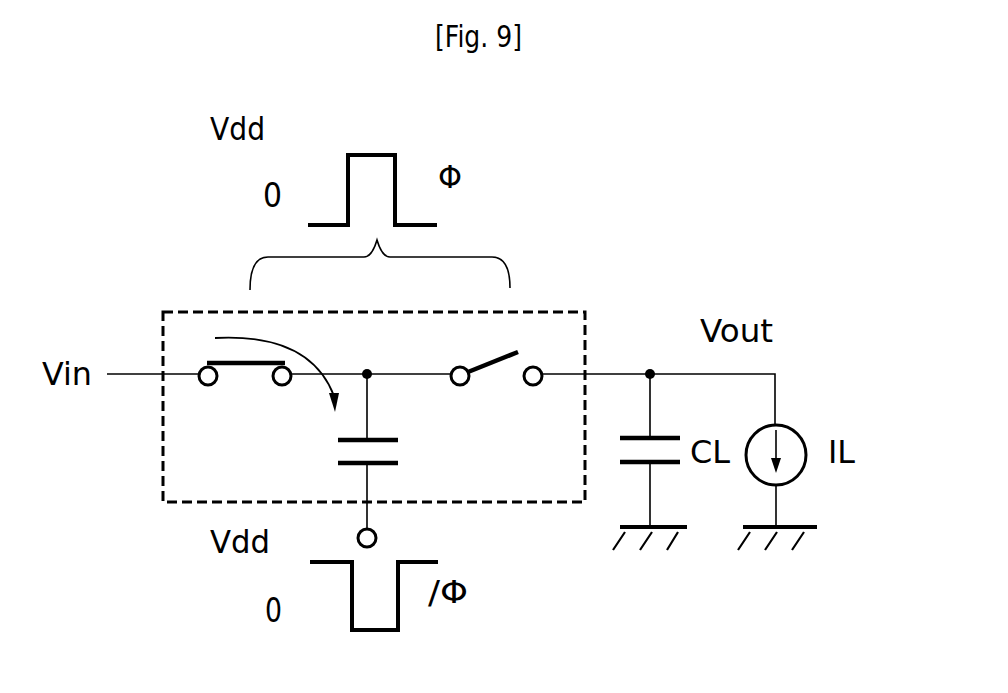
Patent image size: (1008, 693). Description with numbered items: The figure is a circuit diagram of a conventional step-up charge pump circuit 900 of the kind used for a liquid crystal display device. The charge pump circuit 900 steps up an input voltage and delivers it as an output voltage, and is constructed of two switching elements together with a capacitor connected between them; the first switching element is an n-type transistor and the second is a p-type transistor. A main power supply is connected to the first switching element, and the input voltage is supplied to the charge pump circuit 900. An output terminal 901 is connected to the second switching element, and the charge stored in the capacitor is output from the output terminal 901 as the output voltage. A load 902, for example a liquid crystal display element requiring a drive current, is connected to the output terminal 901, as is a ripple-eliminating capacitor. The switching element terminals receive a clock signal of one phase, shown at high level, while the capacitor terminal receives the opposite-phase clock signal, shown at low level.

The charge pump circuit 900 is at (188, 310).
The output terminal 901 is at (650, 369).
The load 902 is at (792, 428).